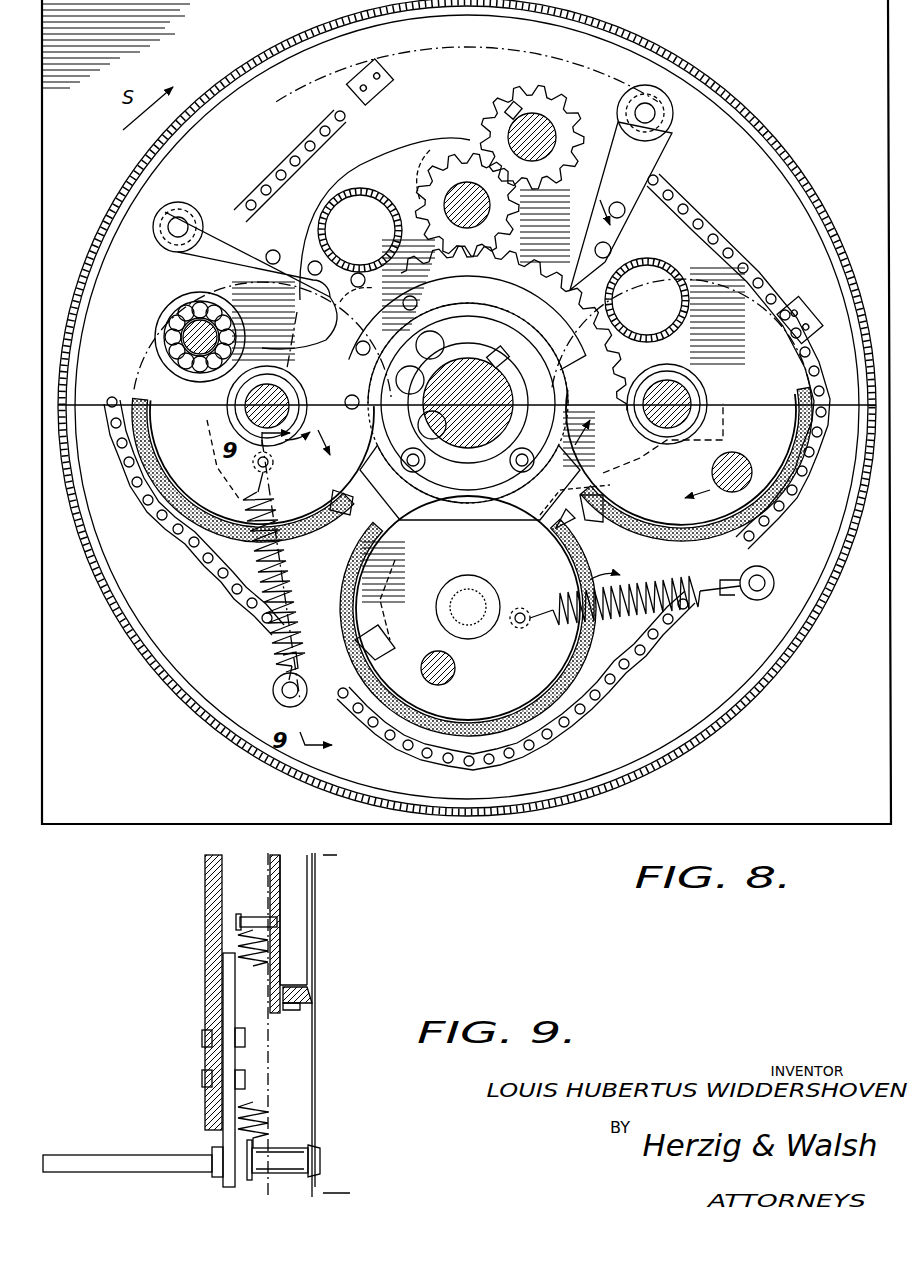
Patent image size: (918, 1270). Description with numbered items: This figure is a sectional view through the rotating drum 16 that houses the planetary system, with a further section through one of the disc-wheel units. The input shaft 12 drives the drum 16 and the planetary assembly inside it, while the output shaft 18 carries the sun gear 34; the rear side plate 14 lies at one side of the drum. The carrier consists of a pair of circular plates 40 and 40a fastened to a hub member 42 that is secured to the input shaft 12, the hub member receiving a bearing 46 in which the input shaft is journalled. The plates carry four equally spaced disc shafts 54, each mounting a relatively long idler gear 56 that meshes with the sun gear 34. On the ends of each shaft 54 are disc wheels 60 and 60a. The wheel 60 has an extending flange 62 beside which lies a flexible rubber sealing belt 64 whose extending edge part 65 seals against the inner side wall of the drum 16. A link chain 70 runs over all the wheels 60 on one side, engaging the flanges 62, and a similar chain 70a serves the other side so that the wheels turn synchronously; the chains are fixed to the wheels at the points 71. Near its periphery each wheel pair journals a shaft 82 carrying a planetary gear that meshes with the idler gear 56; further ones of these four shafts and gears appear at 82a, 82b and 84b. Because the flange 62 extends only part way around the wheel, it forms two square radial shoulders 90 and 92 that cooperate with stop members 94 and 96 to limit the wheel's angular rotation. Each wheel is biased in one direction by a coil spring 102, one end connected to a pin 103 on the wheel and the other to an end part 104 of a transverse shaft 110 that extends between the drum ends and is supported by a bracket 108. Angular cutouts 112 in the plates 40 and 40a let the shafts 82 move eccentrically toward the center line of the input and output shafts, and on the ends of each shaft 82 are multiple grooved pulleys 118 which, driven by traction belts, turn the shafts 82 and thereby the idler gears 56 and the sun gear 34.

In FIG. 8, the input shaft 12 is at (520, 385).
In FIG. 8, the rear side plate 14 is at (810, 760).
In FIG. 8, the rotating drum 16 is at (707, 60).
In FIG. 8, the output shaft 18 is at (482, 350).
In FIG. 8, the sun gear 34 is at (535, 343).
In FIG. 8, the circular plate 40 is at (212, 447).
In FIG. 9, the circular plate 40 is at (205, 931).
In FIG. 8, the circular plate 40a is at (385, 172).
In FIG. 8, the hub member 42 is at (476, 455).
In FIG. 8, the bearing 46 is at (445, 340).
In FIG. 8, the disc shaft 54 is at (462, 180).
In FIG. 8, the idler gear 56 is at (428, 148).
In FIG. 8, the disc wheel 60 is at (237, 510).
In FIG. 9, the disc wheel 60 is at (275, 886).
In FIG. 8, the disc wheel 60a is at (145, 335).
In FIG. 8, the flange 62 is at (130, 397).
In FIG. 9, the flange 62 is at (312, 1040).
In FIG. 9, the flexible rubber sealing belt 64 is at (295, 1010).
In FIG. 8, the extending edge part 65 is at (150, 456).
In FIG. 9, the extending edge part 65 is at (300, 995).
In FIG. 8, the link chain 70 is at (645, 662).
In FIG. 8, the link chain 70a is at (712, 212).
In FIG. 8, the chain securing point 71 is at (362, 74).
In FIG. 8, the shaft 82 is at (430, 675).
In FIG. 8, the planet pin 82a is at (237, 426).
In FIG. 8, the gear shaft 82b is at (526, 116).
In FIG. 8, the spur gear 84b is at (570, 118).
In FIG. 8, the radial shoulder 90 is at (556, 528).
In FIG. 8, the radial shoulder 92 is at (378, 620).
In FIG. 8, the stop member 94 is at (522, 490).
In FIG. 8, the stop member 96 is at (440, 470).
In FIG. 8, the coil spring 102 is at (255, 580).
In FIG. 9, the coil spring 102 is at (270, 1117).
In FIG. 8, the spring pin 103 is at (520, 630).
In FIG. 9, the spring pin 103 is at (240, 918).
In FIG. 8, the end part 104 is at (283, 692).
In FIG. 9, the end part 104 is at (278, 1163).
In FIG. 8, the bracket 108 is at (673, 135).
In FIG. 9, the bracket 108 is at (228, 1059).
In FIG. 8, the transverse shaft 110 is at (180, 222).
In FIG. 9, the transverse shaft 110 is at (80, 1158).
In FIG. 8, the angular groove or cutout 112 is at (320, 342).
In FIG. 8, the multiple grooved pulley 118 is at (362, 790).